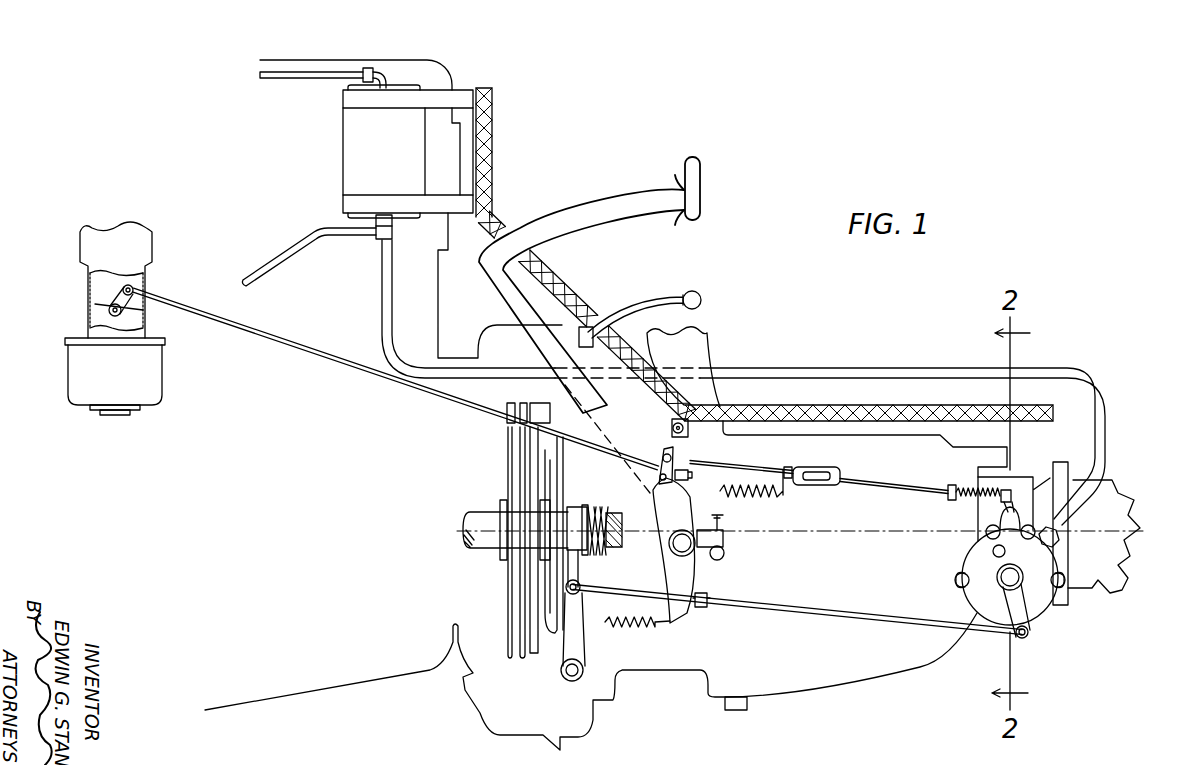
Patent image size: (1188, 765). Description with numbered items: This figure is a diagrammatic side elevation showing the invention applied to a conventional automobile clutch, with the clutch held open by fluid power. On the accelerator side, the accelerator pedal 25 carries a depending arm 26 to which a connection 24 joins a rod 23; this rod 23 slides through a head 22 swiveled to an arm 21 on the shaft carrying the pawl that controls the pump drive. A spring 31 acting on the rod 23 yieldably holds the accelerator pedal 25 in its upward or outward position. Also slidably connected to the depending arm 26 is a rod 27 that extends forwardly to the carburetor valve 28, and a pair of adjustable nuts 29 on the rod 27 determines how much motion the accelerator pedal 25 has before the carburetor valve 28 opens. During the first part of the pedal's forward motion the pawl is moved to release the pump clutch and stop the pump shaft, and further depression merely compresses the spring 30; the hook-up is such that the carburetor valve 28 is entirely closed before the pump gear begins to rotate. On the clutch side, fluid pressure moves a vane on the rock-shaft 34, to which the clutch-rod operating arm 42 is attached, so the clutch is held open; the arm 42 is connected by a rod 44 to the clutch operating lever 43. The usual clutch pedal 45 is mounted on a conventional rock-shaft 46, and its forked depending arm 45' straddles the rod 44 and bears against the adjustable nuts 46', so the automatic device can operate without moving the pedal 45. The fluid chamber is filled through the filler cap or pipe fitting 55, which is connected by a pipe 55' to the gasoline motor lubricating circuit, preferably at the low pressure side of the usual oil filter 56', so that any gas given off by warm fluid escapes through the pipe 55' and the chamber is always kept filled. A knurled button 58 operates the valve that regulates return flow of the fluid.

The oil filter 56' is at (379, 151).
The pipe 55' is at (744, 370).
The clutch pedal 45 is at (589, 278).
The accelerator pedal 25 is at (670, 298).
The carburetor valve 28 is at (90, 310).
The rod 27 is at (582, 443).
The depending arm 26 is at (662, 447).
The connection 24 is at (690, 434).
The adjustable nuts 29 is at (680, 478).
The spring 31 is at (753, 498).
The rod 23 is at (933, 487).
The spring 30 is at (967, 497).
The head 22 is at (1007, 493).
The arm 21 is at (1012, 510).
The filler cap 55 is at (1107, 522).
The knurled button 58 is at (1007, 551).
The rock-shaft 46 is at (696, 550).
The rod 44 is at (863, 615).
The clutch-rod operating arm 42 is at (1017, 605).
The rock-shaft 34 is at (1003, 588).
The clutch operating lever 43 is at (572, 635).
The forked depending arm 45' is at (673, 633).
The adjustable nuts 46' is at (740, 621).